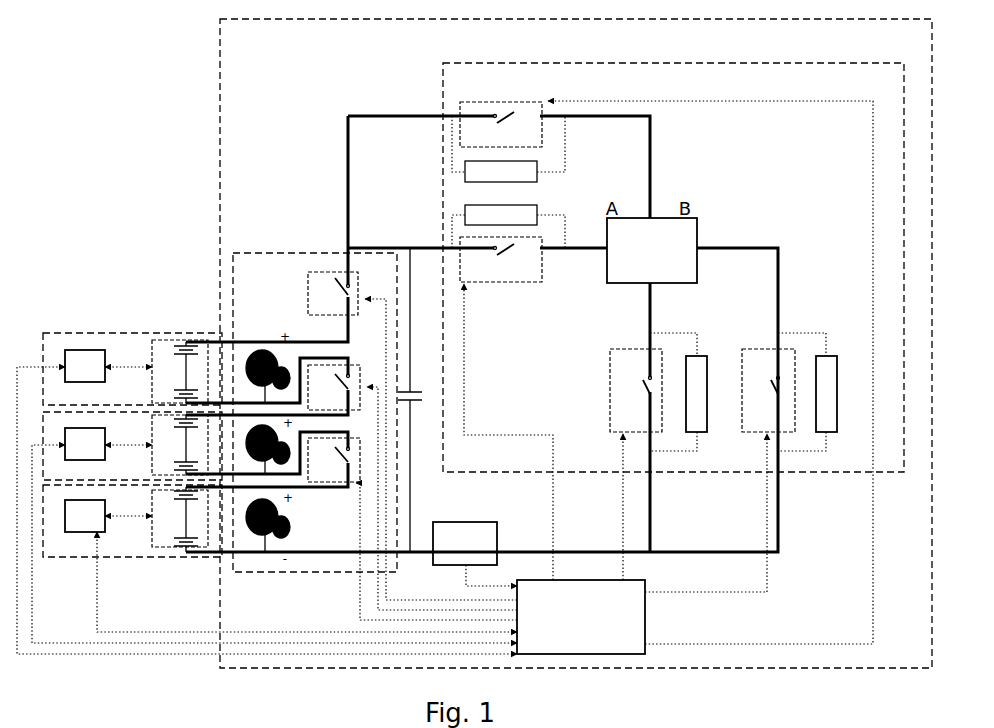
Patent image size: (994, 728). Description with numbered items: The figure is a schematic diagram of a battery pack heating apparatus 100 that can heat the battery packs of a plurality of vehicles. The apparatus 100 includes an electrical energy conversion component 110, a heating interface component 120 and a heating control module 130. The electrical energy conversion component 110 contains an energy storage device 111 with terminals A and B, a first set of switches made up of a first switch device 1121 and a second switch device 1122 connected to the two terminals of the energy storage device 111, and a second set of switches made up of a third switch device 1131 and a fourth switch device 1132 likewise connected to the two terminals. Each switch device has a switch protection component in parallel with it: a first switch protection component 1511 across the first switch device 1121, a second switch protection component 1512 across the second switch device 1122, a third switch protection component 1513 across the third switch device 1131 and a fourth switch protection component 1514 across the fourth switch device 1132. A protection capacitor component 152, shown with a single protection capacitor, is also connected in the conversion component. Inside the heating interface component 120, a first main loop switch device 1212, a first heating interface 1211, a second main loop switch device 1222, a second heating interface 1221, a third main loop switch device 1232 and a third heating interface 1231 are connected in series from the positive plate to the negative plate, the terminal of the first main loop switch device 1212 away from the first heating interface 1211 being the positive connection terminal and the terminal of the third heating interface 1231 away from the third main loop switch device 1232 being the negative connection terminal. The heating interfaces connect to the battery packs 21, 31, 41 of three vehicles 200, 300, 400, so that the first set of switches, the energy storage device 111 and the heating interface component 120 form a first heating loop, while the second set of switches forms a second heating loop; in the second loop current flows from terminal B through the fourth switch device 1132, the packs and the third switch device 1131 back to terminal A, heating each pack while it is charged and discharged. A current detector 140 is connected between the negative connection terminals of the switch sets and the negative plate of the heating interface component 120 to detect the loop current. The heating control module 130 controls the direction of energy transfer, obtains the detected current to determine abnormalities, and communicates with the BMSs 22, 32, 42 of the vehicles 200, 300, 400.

The battery pack heating apparatus 100 is at (576, 343).
The electrical energy conversion component 110 is at (673, 267).
The energy storage device 111 is at (652, 250).
The heating interface component 120 is at (315, 412).
The heating control module 130 is at (581, 617).
The current detector 140 is at (465, 543).
The protection capacitor component 152 is at (420, 400).
The vehicle 200 is at (132, 369).
The vehicle 300 is at (132, 446).
The vehicle 400 is at (132, 520).
The battery pack 21 is at (180, 371).
The BMS 22 is at (85, 366).
The battery pack 31 is at (180, 445).
The BMS 32 is at (85, 444).
The battery pack 41 is at (180, 519).
The BMS 42 is at (85, 516).
The first switch device 1121 is at (501, 259).
The second switch device 1122 is at (636, 390).
The third switch device 1131 is at (501, 124).
The fourth switch device 1132 is at (768, 390).
The first heating interface 1211 is at (270, 376).
The first main loop switch device 1212 is at (333, 293).
The second heating interface 1221 is at (271, 449).
The second main loop switch device 1222 is at (334, 387).
The third heating interface 1231 is at (271, 525).
The third main loop switch device 1232 is at (334, 460).
The first switch protection component 1511 is at (501, 215).
The second switch protection component 1512 is at (692, 392).
The third switch protection component 1513 is at (501, 171).
The fourth switch protection component 1514 is at (823, 392).